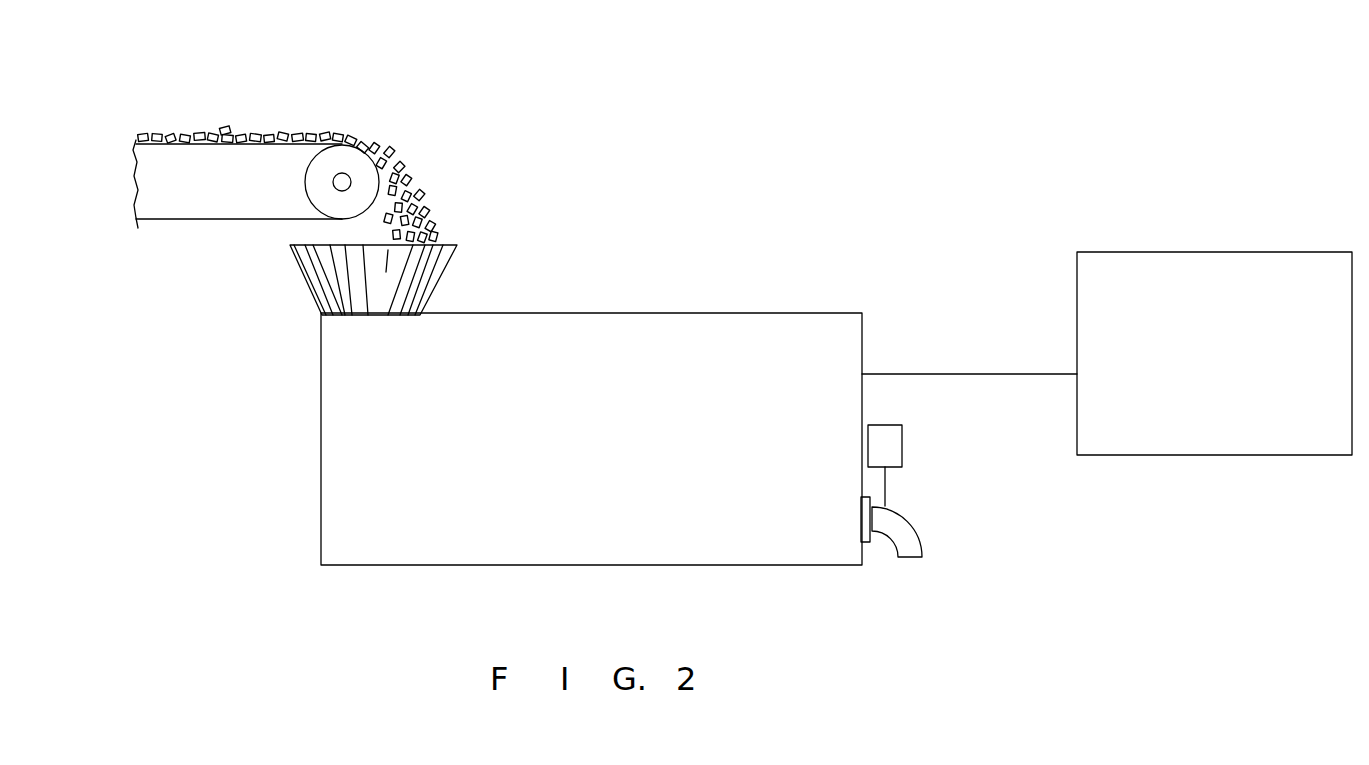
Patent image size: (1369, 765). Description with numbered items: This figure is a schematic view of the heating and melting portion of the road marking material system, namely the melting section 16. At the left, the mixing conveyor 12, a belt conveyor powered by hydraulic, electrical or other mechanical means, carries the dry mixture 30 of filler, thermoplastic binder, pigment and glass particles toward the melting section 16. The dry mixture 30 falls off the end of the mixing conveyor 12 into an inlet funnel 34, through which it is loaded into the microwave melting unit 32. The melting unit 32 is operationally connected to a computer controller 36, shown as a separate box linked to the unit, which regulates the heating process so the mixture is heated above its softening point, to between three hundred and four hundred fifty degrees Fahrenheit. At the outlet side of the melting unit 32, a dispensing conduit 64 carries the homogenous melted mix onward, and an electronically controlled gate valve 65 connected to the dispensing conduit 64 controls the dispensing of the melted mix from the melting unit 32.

The mixing conveyor 12 is at (203, 221).
The melting section 16 is at (757, 160).
The dry mixture 30 is at (402, 162).
The microwave melting unit 32 is at (652, 312).
The inlet funnel 34 is at (445, 272).
The computer controller 36 is at (1223, 250).
The dispensing conduit 64 is at (918, 528).
The gate valve 65 is at (903, 450).